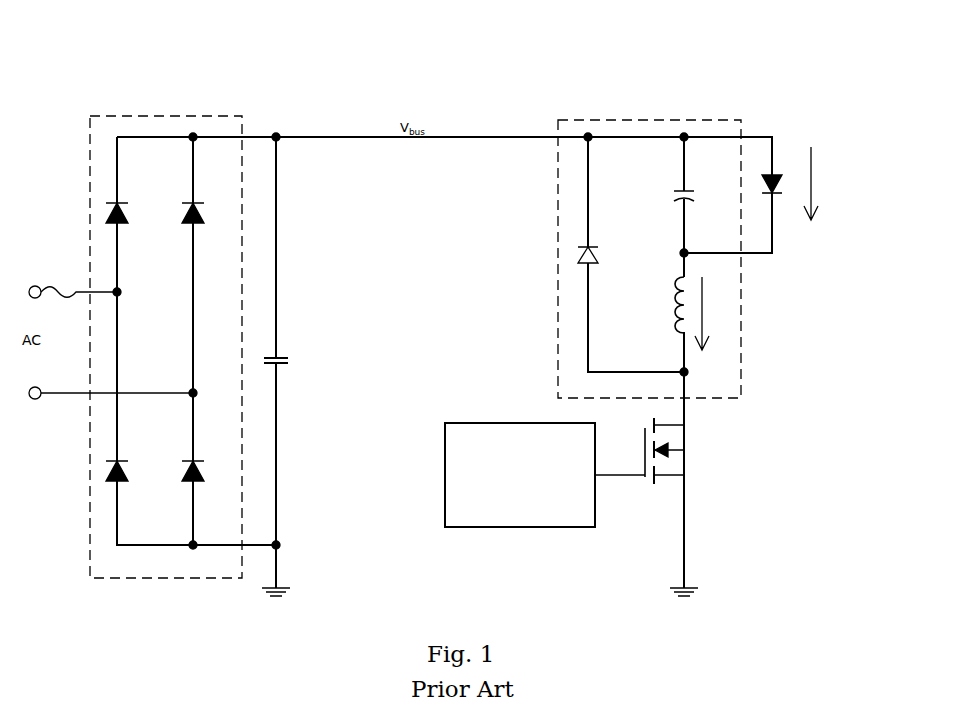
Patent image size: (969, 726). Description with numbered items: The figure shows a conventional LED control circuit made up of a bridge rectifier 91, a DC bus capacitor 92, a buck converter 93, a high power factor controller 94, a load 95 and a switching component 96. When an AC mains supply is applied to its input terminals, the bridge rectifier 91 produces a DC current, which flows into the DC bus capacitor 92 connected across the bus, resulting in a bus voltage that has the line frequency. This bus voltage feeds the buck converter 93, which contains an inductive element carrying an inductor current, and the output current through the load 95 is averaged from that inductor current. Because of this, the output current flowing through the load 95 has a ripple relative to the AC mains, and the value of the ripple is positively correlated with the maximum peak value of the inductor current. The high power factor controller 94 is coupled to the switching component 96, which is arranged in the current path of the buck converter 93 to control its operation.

The bridge rectifier 91 is at (150, 116).
The DC bus capacitor 92 is at (280, 356).
The buck converter 93 is at (647, 120).
The high power factor controller 94 is at (518, 527).
The load 95 is at (776, 171).
The switching component 96 is at (688, 462).